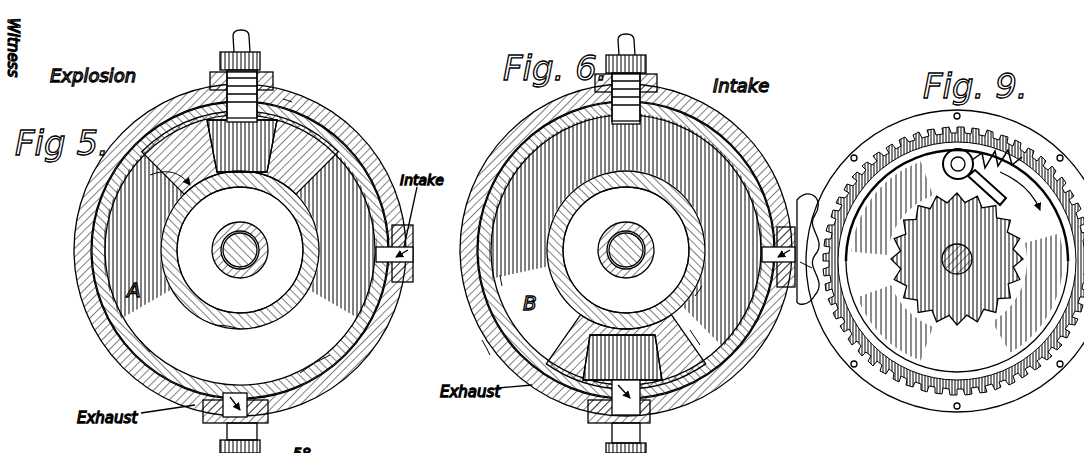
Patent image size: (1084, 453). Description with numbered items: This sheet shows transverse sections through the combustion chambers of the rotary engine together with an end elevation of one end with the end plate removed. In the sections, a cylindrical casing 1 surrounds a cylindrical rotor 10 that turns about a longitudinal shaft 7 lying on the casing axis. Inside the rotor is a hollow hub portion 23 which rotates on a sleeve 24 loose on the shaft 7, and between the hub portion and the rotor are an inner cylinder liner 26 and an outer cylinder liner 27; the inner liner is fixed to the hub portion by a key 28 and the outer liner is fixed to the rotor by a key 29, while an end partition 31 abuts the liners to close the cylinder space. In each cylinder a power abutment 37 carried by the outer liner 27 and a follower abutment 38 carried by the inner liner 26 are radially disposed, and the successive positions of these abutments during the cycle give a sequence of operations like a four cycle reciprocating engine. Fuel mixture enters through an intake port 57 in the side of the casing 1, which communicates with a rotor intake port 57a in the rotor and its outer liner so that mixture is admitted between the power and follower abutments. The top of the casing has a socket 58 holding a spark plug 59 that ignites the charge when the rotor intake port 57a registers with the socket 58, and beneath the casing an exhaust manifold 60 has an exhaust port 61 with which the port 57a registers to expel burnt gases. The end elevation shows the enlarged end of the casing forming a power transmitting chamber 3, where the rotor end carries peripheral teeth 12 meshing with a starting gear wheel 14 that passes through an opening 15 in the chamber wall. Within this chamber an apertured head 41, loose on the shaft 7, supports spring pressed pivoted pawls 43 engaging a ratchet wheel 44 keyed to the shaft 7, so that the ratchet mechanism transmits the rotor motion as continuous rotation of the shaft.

In FIG. 5, the cylindrical casing 1 is at (383, 336).
In FIG. 6, the cylindrical casing 1 is at (730, 127).
In FIG. 9, the power transmitting chamber 3 is at (990, 392).
In FIG. 5, the longitudinal shaft 7 is at (246, 251).
In FIG. 6, the longitudinal shaft 7 is at (632, 256).
In FIG. 9, the longitudinal shaft 7 is at (944, 253).
In FIG. 5, the cylindrical rotor 10 is at (330, 113).
In FIG. 6, the cylindrical rotor 10 is at (522, 133).
In FIG. 9, the peripheral teeth 12 is at (890, 140).
In FIG. 9, the gear wheel 14 is at (803, 200).
In FIG. 9, the opening 15 is at (818, 300).
In FIG. 5, the hollow hub portion 23 is at (292, 236).
In FIG. 6, the hollow hub portion 23 is at (596, 192).
In FIG. 5, the sleeve 24 is at (214, 255).
In FIG. 6, the sleeve 24 is at (600, 260).
In FIG. 5, the inner cylinder liner 26 is at (229, 327).
In FIG. 6, the inner cylinder liner 26 is at (702, 286).
In FIG. 5, the outer cylinder liner 27 is at (150, 352).
In FIG. 6, the outer cylinder liner 27 is at (502, 286).
In FIG. 5, the key 28 is at (202, 313).
In FIG. 6, the key 28 is at (597, 304).
In FIG. 5, the key 29 is at (307, 372).
In FIG. 6, the key 29 is at (482, 340).
In FIG. 6, the end partition 31 is at (717, 306).
In FIG. 5, the power abutment 37 is at (211, 182).
In FIG. 5, the follower abutment 38 is at (263, 174).
In FIG. 6, the follower abutment 38 is at (557, 327).
In FIG. 9, the apertured head 41 is at (1030, 232).
In FIG. 9, the pivoted pawl 43 is at (947, 178).
In FIG. 9, the ratchet wheel 44 is at (957, 259).
In FIG. 5, the intake port 57 is at (413, 258).
In FIG. 6, the intake port 57 is at (785, 292).
In FIG. 5, the rotor intake port 57a is at (293, 102).
In FIG. 6, the rotor intake port 57a is at (634, 392).
In FIG. 5, the socket 58 is at (272, 85).
In FIG. 6, the socket 58 is at (658, 82).
In FIG. 5, the spark plug 59 is at (249, 50).
In FIG. 6, the spark plug 59 is at (641, 52).
In FIG. 5, the exhaust manifold 60 is at (270, 414).
In FIG. 6, the exhaust manifold 60 is at (652, 418).
In FIG. 5, the exhaust port 61 is at (230, 412).
In FIG. 6, the exhaust port 61 is at (620, 407).